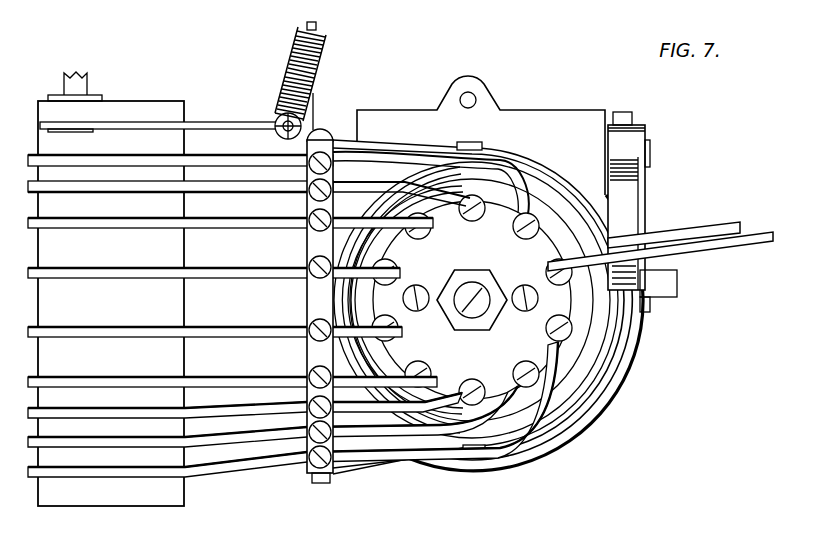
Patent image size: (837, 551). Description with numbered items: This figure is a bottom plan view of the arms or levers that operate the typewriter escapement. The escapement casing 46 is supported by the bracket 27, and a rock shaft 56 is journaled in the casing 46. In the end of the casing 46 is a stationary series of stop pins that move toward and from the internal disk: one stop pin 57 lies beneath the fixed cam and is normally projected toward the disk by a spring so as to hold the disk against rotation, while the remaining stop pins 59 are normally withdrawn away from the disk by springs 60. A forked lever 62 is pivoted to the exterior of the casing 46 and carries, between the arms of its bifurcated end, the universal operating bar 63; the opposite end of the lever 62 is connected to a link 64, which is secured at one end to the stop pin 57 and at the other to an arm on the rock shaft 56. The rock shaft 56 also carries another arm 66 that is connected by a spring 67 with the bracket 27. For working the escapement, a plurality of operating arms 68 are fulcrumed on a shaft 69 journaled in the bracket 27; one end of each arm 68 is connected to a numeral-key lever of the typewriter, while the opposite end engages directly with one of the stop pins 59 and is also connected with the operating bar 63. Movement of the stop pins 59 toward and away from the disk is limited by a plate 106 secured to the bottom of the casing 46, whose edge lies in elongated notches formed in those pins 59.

The bracket 27 is at (160, 101).
The casing 46 is at (593, 408).
The rock shaft 56 is at (648, 157).
The stop pin 57 is at (573, 258).
The stop pins 59 is at (527, 212).
The springs 60 is at (250, 418).
The forked lever 62 is at (613, 313).
The operating bar 63 is at (307, 299).
The link 64 is at (760, 231).
The arm 66 is at (313, 120).
The spring 67 is at (285, 68).
The operating arms 68 is at (227, 184).
The shaft 69 is at (80, 82).
The plate 106 is at (540, 238).